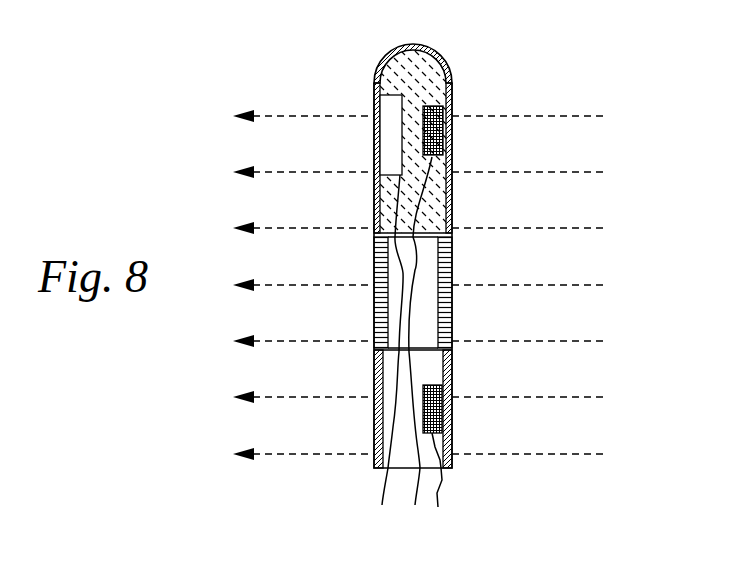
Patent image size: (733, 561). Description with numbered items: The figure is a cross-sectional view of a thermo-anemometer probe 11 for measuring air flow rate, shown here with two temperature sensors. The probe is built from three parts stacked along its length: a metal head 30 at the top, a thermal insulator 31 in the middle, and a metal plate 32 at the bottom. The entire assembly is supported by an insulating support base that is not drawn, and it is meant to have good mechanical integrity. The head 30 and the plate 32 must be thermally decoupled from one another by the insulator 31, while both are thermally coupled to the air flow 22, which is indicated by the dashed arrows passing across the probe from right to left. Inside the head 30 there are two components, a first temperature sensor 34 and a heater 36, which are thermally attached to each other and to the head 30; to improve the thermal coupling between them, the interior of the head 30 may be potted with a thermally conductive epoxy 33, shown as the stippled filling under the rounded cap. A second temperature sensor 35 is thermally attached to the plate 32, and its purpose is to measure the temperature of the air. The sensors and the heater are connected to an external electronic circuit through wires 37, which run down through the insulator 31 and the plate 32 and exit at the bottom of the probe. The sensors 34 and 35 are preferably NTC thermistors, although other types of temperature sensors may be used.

The thermo-anemometer probe 11 is at (357, 59).
The air flow 22 is at (616, 112).
The metal head 30 is at (442, 179).
The thermal insulator 31 is at (452, 301).
The metal plate 32 is at (376, 407).
The thermally conductive epoxy 33 is at (449, 78).
The first temperature sensor 34 is at (445, 131).
The second temperature sensor 35 is at (443, 423).
The heater 36 is at (391, 108).
The wires 37 is at (372, 511).